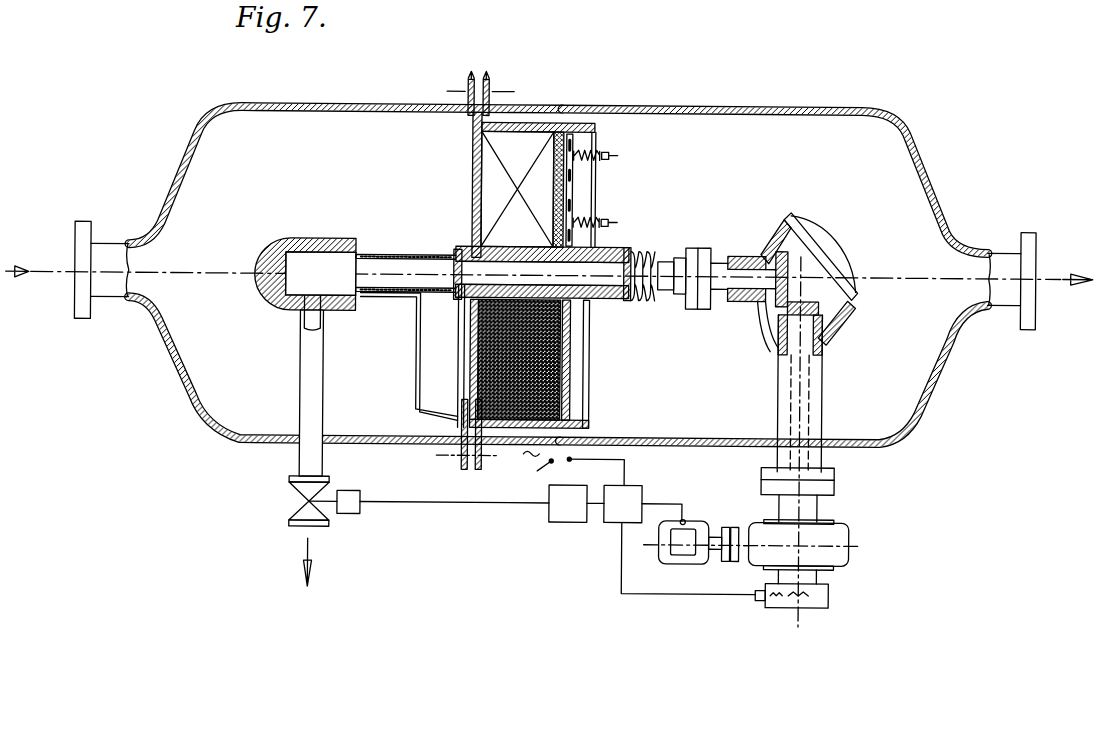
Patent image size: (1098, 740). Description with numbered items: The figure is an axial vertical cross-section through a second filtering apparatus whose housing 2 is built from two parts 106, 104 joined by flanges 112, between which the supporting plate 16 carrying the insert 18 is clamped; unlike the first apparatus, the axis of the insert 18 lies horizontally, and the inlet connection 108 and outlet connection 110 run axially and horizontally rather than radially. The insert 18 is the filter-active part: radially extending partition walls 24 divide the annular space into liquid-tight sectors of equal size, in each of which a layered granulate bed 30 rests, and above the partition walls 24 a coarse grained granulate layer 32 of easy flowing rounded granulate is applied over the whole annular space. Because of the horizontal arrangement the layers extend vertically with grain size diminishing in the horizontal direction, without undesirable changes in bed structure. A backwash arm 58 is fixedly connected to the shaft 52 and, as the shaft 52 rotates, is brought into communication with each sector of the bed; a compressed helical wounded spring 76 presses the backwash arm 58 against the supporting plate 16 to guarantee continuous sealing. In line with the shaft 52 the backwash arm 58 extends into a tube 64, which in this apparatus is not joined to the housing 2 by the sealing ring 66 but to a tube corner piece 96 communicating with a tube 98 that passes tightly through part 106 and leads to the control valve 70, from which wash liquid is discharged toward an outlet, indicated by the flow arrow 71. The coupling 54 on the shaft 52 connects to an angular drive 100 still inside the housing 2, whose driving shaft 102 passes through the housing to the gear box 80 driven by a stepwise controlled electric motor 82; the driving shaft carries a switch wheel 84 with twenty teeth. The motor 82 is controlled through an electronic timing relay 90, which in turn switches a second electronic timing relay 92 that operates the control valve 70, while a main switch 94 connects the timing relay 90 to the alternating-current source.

The housing 2 is at (549, 247).
The supporting plate 16 is at (470, 120).
The insert 18 is at (600, 371).
The partition walls 24 is at (528, 124).
The granulate bed 30 is at (533, 398).
The coarse grained granulate layer 32 is at (556, 410).
The shaft 52 is at (609, 289).
The coupling 54 is at (700, 246).
The backwash arm 58 is at (445, 352).
The tube 64 is at (382, 293).
The sealing ring 66 is at (353, 254).
The control valve 70 is at (300, 489).
The discharge flow arrow 71 is at (320, 562).
The helical wounded spring 76 is at (600, 170).
The gear box 80 is at (840, 532).
The stepwise controlled electric motor 82 is at (702, 520).
The switch wheel 84 is at (818, 611).
The electronic timing relay 90 is at (632, 490).
The second electronic timing relay 92 is at (574, 490).
The main switch 94 is at (556, 468).
The tube corner piece 96 is at (300, 240).
The tube 98 is at (313, 393).
The angular drive 100 is at (837, 319).
The driving shaft 102 is at (823, 388).
The housing part 104 is at (841, 104).
The housing part 106 is at (220, 106).
The inlet connection 108 is at (111, 296).
The outlet connection 110 is at (1004, 305).
The flanges 112 is at (481, 80).